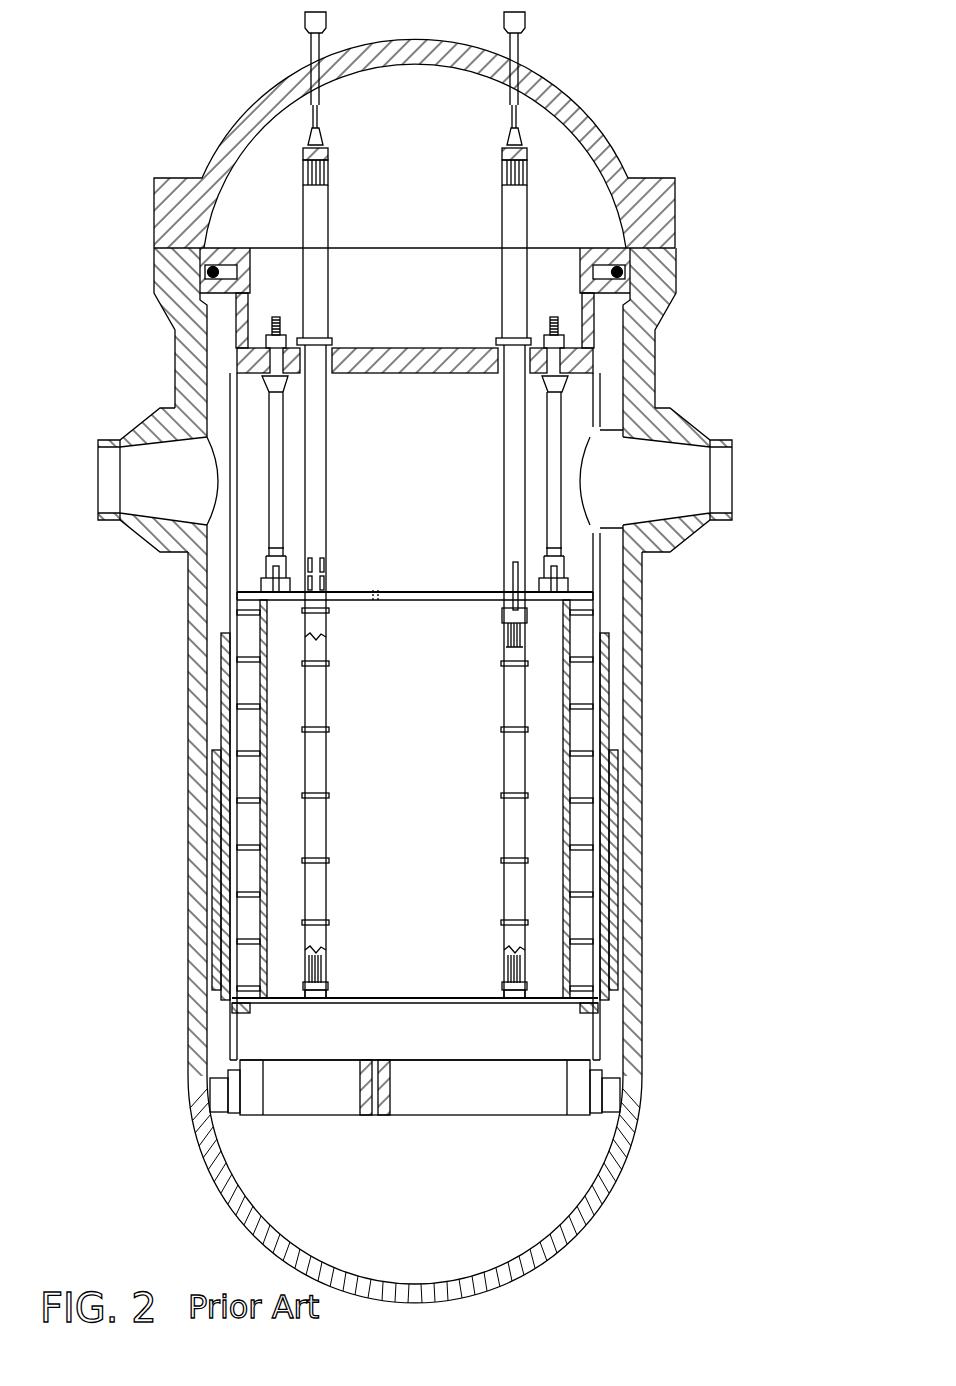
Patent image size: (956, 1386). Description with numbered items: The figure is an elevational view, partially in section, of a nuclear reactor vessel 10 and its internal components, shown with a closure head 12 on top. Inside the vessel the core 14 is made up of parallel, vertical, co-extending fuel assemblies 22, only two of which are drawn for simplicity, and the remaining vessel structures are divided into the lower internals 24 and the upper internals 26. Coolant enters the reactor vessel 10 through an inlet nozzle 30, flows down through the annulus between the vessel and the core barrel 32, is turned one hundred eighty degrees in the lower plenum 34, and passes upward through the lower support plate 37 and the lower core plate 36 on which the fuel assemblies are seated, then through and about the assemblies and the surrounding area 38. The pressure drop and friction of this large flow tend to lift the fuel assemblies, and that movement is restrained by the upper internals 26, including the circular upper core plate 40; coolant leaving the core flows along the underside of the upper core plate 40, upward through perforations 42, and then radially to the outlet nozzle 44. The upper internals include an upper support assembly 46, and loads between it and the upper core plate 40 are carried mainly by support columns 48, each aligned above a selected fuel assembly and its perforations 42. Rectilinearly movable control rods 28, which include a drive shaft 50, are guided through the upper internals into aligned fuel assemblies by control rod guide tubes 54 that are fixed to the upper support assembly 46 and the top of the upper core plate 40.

The reactor vessel 10 is at (642, 668).
The closure head 12 is at (683, 215).
The core 14 is at (433, 787).
The fuel assemblies 22 is at (326, 696).
The lower internals 24 is at (430, 1041).
The upper internals 26 is at (433, 452).
The control rods 28 is at (507, 595).
The inlet nozzles 30 is at (127, 418).
The core barrel 32 is at (229, 592).
The lower plenum 34 is at (583, 1167).
The lower core plate 36 is at (480, 998).
The lower support plate 37 is at (455, 1100).
The surrounding area 38 is at (470, 770).
The upper core plate 40 is at (425, 597).
The perforations 42 is at (373, 592).
The outlet nozzles 44 is at (690, 427).
The upper support assembly 46 is at (597, 248).
The support columns 48 is at (548, 432).
The drive shaft 50 is at (505, 560).
The control rod guide tubes 54 is at (323, 422).